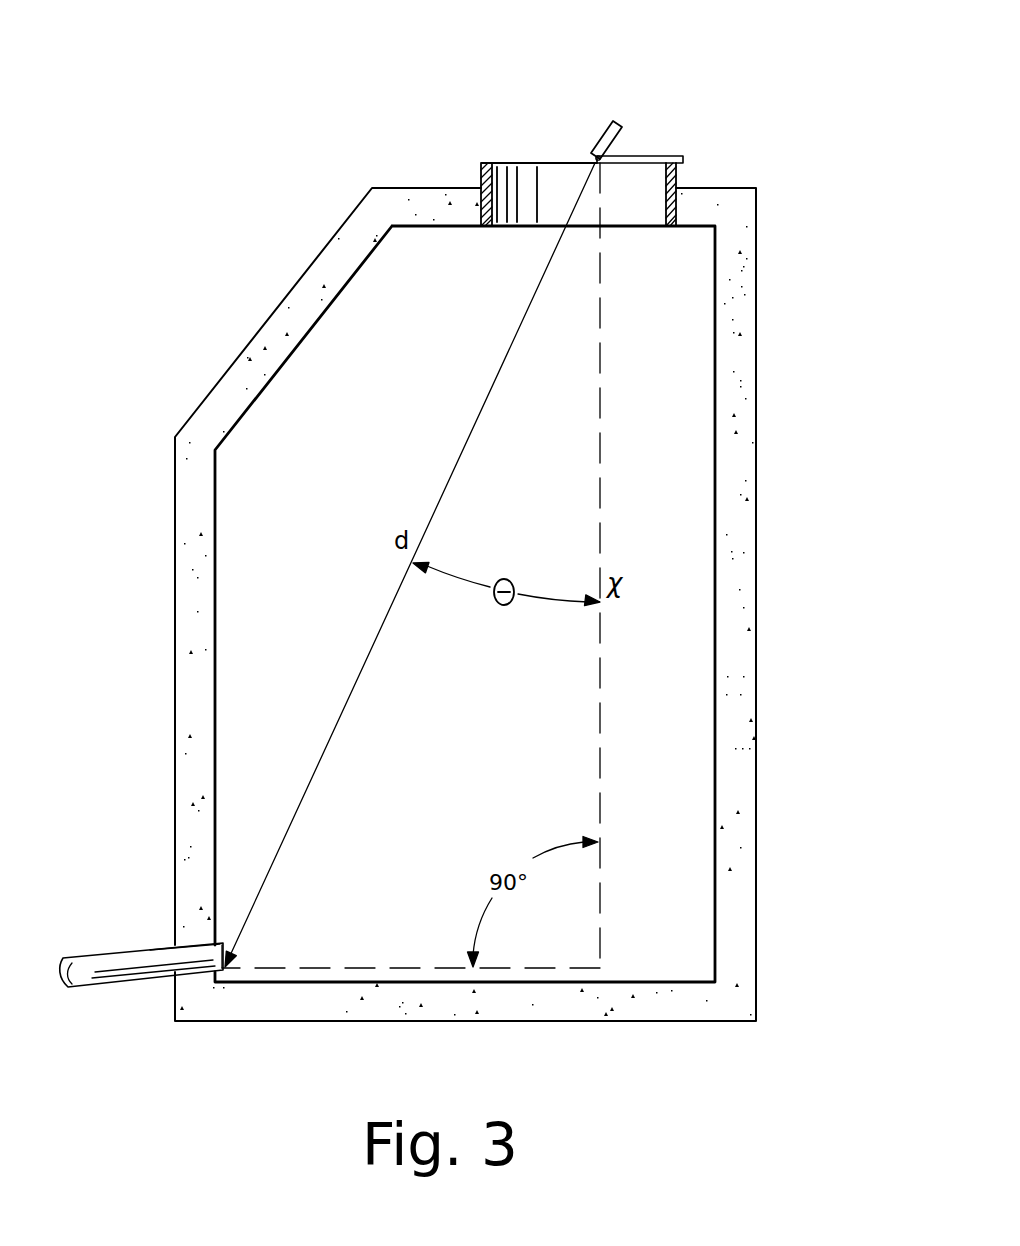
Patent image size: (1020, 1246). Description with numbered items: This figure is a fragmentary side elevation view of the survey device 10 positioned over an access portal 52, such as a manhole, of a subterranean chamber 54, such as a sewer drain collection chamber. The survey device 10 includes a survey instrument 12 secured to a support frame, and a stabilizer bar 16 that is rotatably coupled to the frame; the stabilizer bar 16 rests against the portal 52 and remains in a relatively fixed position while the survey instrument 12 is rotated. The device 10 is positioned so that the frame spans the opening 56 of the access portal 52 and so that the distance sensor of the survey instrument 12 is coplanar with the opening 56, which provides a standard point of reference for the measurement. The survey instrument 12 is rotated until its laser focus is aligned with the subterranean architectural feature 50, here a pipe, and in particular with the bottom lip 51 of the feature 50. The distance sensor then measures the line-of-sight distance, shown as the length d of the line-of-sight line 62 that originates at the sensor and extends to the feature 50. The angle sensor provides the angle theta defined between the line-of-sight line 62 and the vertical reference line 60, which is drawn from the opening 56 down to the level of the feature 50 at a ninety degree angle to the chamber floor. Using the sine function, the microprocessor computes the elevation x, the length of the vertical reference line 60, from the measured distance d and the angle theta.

The survey device 10 is at (660, 108).
The survey instrument 12 is at (591, 106).
The stabilizer bar 16 is at (672, 153).
The subterranean architectural feature 50 is at (210, 942).
The bottom lip 51 is at (254, 962).
The access portal 52 is at (466, 160).
The subterranean chamber 54 is at (348, 333).
The opening 56 is at (538, 147).
The vertical reference line 60 is at (603, 660).
The line-of-sight line 62 is at (330, 724).